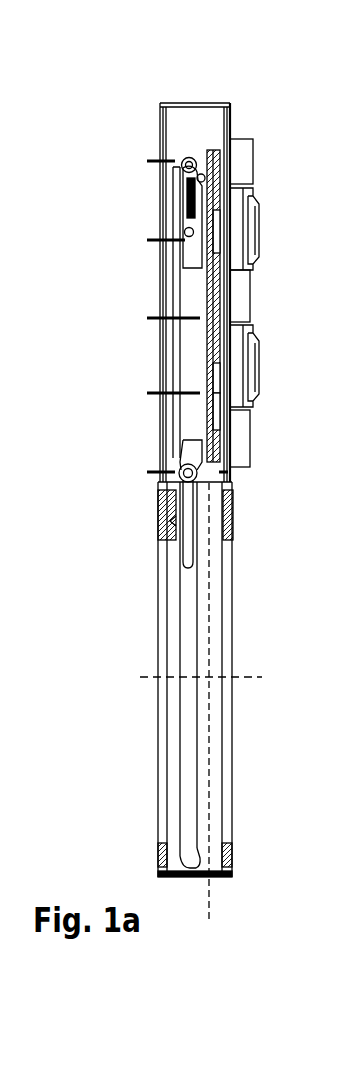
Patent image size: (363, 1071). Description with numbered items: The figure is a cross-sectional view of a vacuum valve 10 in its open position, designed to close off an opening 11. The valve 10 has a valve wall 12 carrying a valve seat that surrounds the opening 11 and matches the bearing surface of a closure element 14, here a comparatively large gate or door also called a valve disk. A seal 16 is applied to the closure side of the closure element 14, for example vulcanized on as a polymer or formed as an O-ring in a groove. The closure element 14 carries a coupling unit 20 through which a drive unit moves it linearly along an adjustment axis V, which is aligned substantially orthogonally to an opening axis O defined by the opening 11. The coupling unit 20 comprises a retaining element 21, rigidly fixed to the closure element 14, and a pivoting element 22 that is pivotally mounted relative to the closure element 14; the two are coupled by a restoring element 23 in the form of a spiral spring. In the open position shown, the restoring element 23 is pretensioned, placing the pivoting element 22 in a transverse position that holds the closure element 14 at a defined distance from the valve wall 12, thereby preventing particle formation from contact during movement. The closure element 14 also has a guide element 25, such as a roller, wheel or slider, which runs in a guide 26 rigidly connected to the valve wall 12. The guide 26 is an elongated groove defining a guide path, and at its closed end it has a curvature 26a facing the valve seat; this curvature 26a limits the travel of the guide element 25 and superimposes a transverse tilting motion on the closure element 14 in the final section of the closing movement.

The valve 10 is at (153, 80).
The coupling unit 20 is at (181, 148).
The pivoting element 22 is at (184, 173).
The restoring element 23 is at (172, 222).
The retaining element 21 is at (193, 253).
The seal 16 is at (222, 148).
The closure element 14 is at (215, 298).
The guide element 25 is at (181, 468).
The valve wall 12 is at (232, 532).
The opening 11 is at (237, 632).
The guide 26 is at (185, 607).
The curvature 26a is at (191, 855).
The opening axis O is at (140, 677).
The adjustment axis V is at (209, 915).